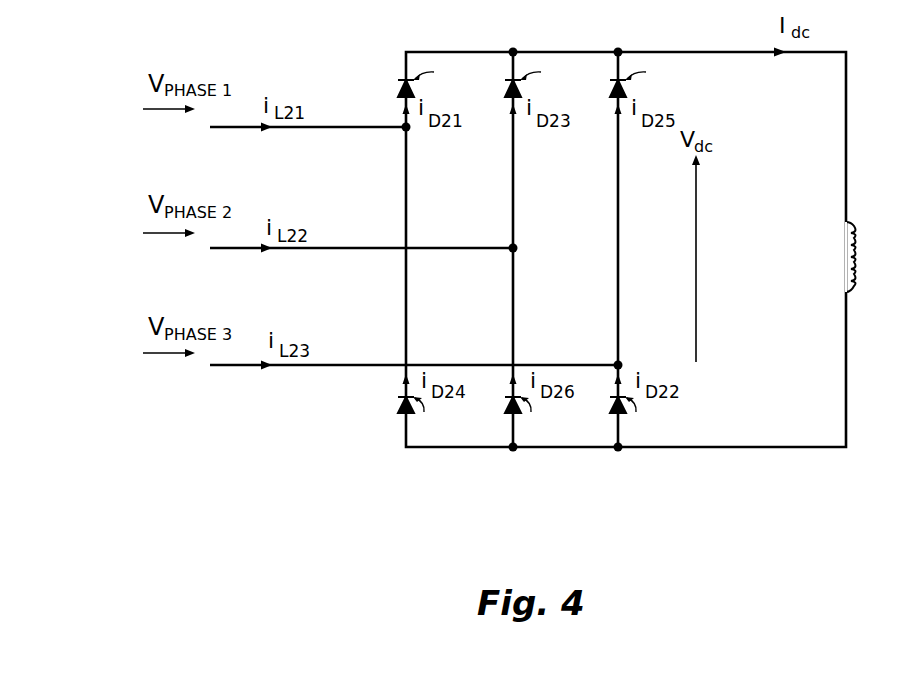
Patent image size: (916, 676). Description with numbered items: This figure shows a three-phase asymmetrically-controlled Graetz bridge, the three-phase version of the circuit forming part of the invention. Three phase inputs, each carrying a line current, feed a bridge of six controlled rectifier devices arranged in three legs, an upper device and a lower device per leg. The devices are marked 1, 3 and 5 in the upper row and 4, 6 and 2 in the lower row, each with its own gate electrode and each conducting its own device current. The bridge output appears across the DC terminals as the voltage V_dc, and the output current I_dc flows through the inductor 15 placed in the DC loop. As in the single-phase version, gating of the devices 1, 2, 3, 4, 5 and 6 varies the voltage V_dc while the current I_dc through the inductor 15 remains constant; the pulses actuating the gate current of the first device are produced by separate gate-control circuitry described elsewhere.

The inductor 15 is at (855, 252).
The thyristor 1 is at (426, 81).
The thyristor 2 is at (634, 414).
The thyristor 3 is at (531, 81).
The thyristor 4 is at (420, 414).
The thyristor 5 is at (636, 81).
The thyristor 6 is at (528, 414).